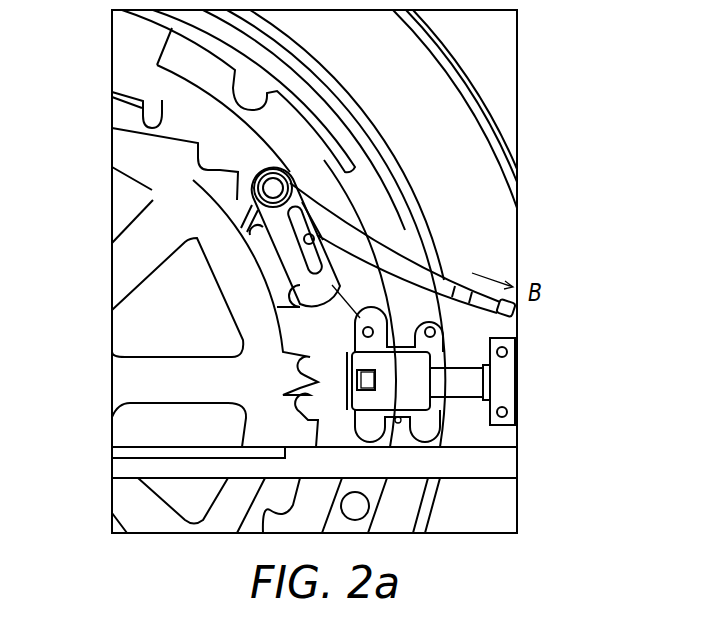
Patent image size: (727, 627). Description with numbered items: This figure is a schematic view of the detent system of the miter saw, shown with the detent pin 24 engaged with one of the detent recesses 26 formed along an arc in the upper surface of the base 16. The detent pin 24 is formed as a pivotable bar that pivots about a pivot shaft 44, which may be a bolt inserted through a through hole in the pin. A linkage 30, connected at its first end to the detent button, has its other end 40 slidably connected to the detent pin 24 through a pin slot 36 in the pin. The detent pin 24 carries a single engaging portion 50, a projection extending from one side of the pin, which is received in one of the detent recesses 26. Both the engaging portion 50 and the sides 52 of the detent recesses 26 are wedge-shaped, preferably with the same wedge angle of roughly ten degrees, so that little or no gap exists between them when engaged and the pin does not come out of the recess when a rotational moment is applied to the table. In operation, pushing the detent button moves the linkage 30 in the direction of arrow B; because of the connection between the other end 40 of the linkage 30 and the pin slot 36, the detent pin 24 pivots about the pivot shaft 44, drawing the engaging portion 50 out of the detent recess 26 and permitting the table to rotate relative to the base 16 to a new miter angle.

The base 16 is at (143, 428).
The detent pin 24 is at (287, 235).
The detent recesses 26 is at (290, 297).
The linkage 30 is at (493, 303).
The pin slot 36 is at (270, 217).
The other end of linkage 40 is at (314, 238).
The pivot shaft 44 is at (282, 190).
The engaging portion 50 is at (363, 310).
The sides of the detent recesses 52 is at (142, 100).